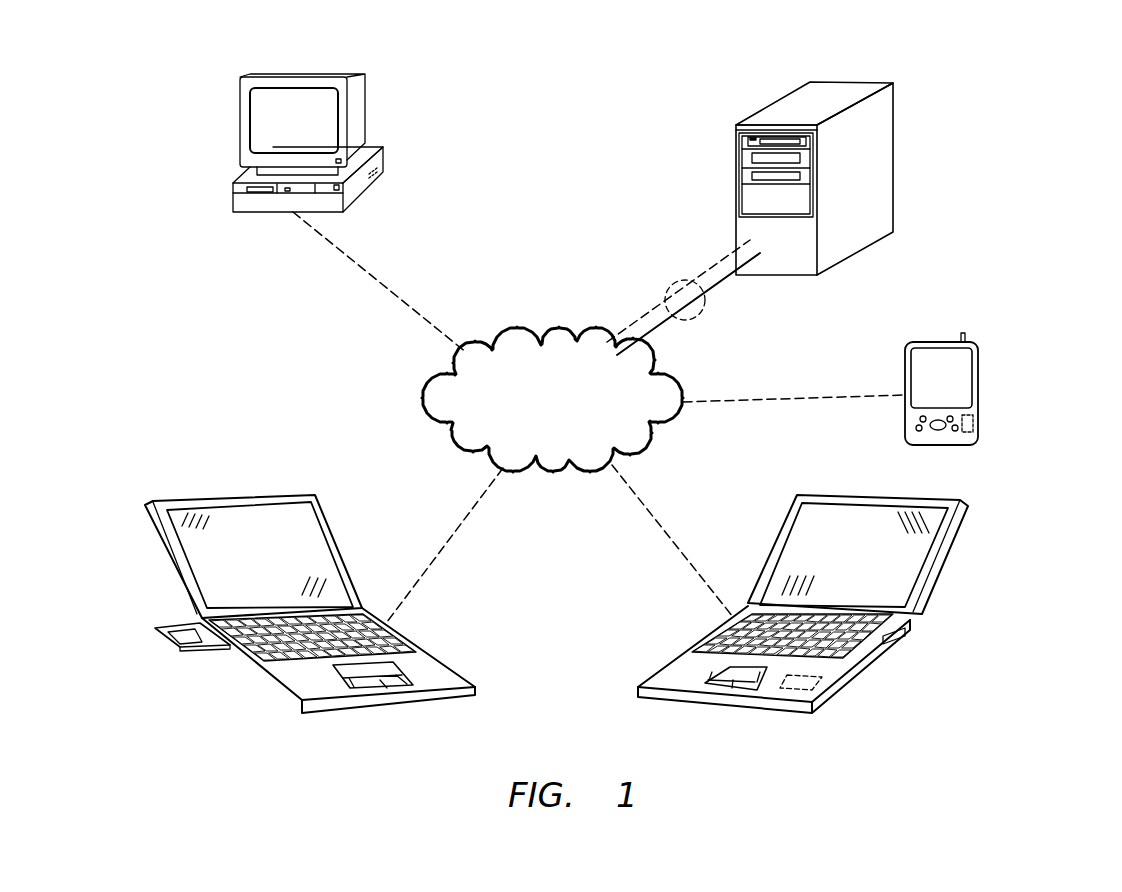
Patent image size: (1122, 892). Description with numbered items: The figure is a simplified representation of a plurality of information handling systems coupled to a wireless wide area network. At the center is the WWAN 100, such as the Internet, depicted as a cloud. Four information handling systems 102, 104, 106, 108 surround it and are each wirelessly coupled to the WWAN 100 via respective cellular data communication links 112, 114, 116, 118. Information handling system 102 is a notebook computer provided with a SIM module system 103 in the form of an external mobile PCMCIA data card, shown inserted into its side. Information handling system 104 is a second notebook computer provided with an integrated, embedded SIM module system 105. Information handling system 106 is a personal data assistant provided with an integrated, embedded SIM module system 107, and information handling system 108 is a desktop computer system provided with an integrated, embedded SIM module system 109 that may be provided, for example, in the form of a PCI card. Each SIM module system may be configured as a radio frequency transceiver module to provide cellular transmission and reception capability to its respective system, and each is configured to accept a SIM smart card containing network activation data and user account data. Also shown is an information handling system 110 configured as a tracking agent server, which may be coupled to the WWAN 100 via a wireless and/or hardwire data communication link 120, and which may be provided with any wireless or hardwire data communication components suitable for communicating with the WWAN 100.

The WWAN 100 is at (550, 327).
The information handling system 102 is at (440, 660).
The SIM module system 103 is at (190, 652).
The information handling system 104 is at (940, 565).
The SIM module system 105 is at (823, 682).
The information handling system 106 is at (978, 373).
The SIM module system 107 is at (973, 427).
The information handling system 108 is at (383, 158).
The SIM module system 109 is at (377, 175).
The information handling system 110 is at (895, 175).
The cellular data communication link 112 is at (448, 542).
The cellular data communication link 114 is at (663, 527).
The cellular data communication link 116 is at (803, 395).
The cellular data communication link 118 is at (383, 283).
The data communication link 120 is at (693, 316).